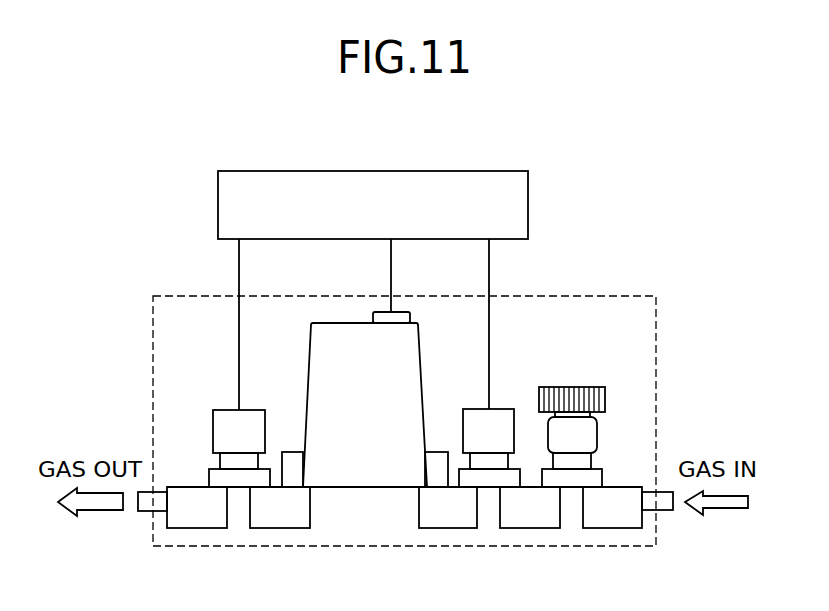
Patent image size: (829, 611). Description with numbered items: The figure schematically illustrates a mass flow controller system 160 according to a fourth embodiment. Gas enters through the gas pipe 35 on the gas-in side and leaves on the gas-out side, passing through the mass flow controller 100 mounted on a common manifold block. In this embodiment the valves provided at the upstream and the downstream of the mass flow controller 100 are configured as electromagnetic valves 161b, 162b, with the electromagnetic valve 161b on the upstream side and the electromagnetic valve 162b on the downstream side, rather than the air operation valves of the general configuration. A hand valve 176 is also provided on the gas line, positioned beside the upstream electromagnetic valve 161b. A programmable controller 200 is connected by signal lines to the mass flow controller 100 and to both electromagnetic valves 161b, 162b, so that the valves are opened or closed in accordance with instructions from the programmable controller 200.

The programmable controller 200 is at (497, 171).
The mass flow controller 100 is at (333, 323).
The mass flow controller system 160 is at (622, 296).
The electromagnetic valve 162b is at (222, 410).
The electromagnetic valve 161b is at (503, 409).
The hand valve 176 is at (595, 387).
The gas pipe 35 is at (662, 510).